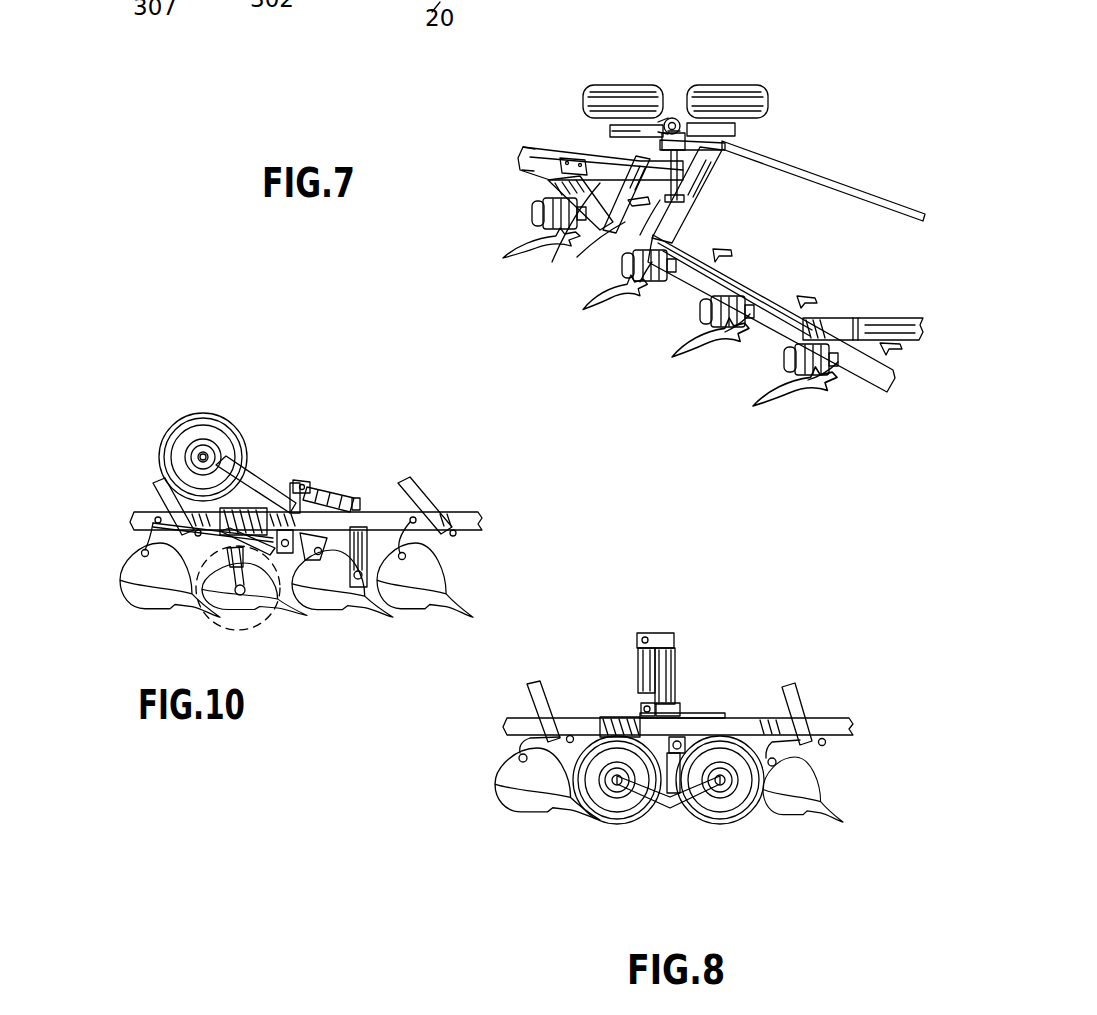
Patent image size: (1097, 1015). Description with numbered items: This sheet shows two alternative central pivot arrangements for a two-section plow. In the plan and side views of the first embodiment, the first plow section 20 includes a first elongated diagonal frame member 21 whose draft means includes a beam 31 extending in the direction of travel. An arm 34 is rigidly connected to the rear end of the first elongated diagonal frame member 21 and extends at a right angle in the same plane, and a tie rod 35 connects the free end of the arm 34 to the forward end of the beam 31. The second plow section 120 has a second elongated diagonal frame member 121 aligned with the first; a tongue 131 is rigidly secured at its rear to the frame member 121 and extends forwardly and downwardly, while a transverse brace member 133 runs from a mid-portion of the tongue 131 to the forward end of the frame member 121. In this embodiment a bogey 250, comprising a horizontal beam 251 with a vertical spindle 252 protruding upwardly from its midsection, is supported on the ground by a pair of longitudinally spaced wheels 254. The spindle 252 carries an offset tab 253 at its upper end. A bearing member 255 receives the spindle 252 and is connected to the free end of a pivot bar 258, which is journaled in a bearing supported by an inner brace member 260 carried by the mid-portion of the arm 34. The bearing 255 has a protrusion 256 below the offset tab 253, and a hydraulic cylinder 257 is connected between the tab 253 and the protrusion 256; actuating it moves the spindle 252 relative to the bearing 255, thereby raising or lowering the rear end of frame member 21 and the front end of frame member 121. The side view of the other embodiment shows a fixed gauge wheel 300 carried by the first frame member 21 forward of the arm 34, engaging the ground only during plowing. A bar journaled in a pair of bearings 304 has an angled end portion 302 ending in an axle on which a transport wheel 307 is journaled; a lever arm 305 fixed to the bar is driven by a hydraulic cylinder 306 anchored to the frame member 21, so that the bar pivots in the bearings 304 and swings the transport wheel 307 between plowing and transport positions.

In FIG. 7, the first plow section 20 is at (742, 378).
In FIG. 8, the first plow section 20 is at (843, 672).
In FIG. 7, the first elongated diagonal frame member 21 is at (783, 320).
In FIG. 10, the first elongated diagonal frame member 21 is at (462, 512).
In FIG. 8, the first elongated diagonal frame member 21 is at (835, 722).
In FIG. 7, the beam 31 is at (877, 318).
In FIG. 7, the arm 34 is at (703, 223).
In FIG. 7, the tie rod 35 is at (873, 196).
In FIG. 7, the second plow section 120 is at (515, 207).
In FIG. 8, the second plow section 120 is at (500, 745).
In FIG. 7, the second elongated diagonal frame member 121 is at (517, 168).
In FIG. 10, the second elongated diagonal frame member 121 is at (128, 518).
In FIG. 8, the second elongated diagonal frame member 121 is at (518, 725).
In FIG. 7, the tongue 131 is at (560, 152).
In FIG. 8, the tongue 131 is at (655, 745).
In FIG. 7, the transverse brace member 133 is at (615, 237).
In FIG. 7, the bogey 250 is at (782, 95).
In FIG. 8, the bogey 250 is at (765, 830).
In FIG. 7, the horizontal beam 251 is at (735, 129).
In FIG. 8, the horizontal beam 251 is at (672, 802).
In FIG. 7, the vertical spindle 252 is at (680, 133).
In FIG. 8, the vertical spindle 252 is at (680, 657).
In FIG. 7, the offset tab 253 is at (672, 118).
In FIG. 8, the offset tab 253 is at (665, 633).
In FIG. 7, the wheels 254 is at (600, 87).
In FIG. 8, the wheels 254 is at (617, 825).
In FIG. 7, the bearing member 255 is at (727, 147).
In FIG. 8, the bearing member 255 is at (678, 707).
In FIG. 8, the protrusion 256 is at (632, 735).
In FIG. 7, the hydraulic cylinder 257 is at (597, 157).
In FIG. 8, the hydraulic cylinder 257 is at (643, 668).
In FIG. 7, the pivot bar 258 is at (682, 190).
In FIG. 8, the pivot bar 258 is at (633, 825).
In FIG. 7, the inner brace member 260 is at (660, 207).
In FIG. 8, the inner brace member 260 is at (690, 737).
In FIG. 10, the fixed gauge wheel 300 is at (375, 597).
In FIG. 10, the angled end portion 302 is at (258, 487).
In FIG. 10, the bearings 304 is at (335, 512).
In FIG. 10, the lever arm 305 is at (282, 503).
In FIG. 10, the hydraulic cylinder 306 is at (300, 507).
In FIG. 10, the transport wheel 307 is at (188, 420).